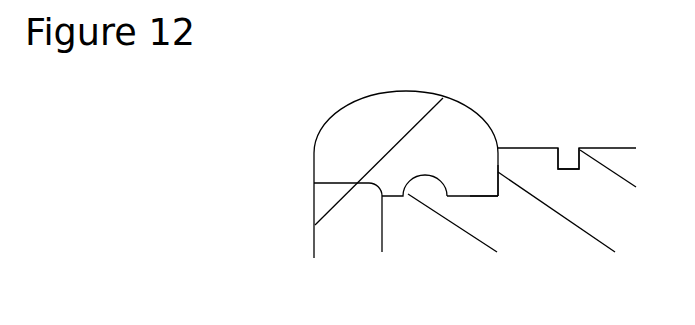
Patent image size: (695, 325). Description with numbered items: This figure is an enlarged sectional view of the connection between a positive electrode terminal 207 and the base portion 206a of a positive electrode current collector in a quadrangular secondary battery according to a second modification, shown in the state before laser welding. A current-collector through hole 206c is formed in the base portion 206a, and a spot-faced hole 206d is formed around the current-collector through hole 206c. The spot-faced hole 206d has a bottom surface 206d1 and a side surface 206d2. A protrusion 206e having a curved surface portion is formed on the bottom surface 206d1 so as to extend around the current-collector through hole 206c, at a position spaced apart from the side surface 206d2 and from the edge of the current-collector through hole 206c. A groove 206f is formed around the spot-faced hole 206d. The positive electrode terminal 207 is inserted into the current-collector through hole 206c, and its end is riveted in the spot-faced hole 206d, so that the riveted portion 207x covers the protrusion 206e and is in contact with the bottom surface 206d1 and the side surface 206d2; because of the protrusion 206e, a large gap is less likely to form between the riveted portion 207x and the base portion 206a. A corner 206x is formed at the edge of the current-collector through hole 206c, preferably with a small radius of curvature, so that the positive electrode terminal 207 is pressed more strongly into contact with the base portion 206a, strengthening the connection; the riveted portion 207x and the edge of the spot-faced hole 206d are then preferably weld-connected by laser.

The positive electrode terminal 207 is at (330, 131).
The riveted portion 207x is at (403, 120).
The corner 206x is at (313, 178).
The current-collector through hole 206c is at (382, 240).
The protrusion 206e is at (421, 184).
The spot-faced hole 206d is at (476, 183).
The bottom surface 206d1 is at (479, 197).
The side surface 206d2 is at (499, 182).
The base portion 206a is at (614, 145).
The groove 206f is at (570, 167).